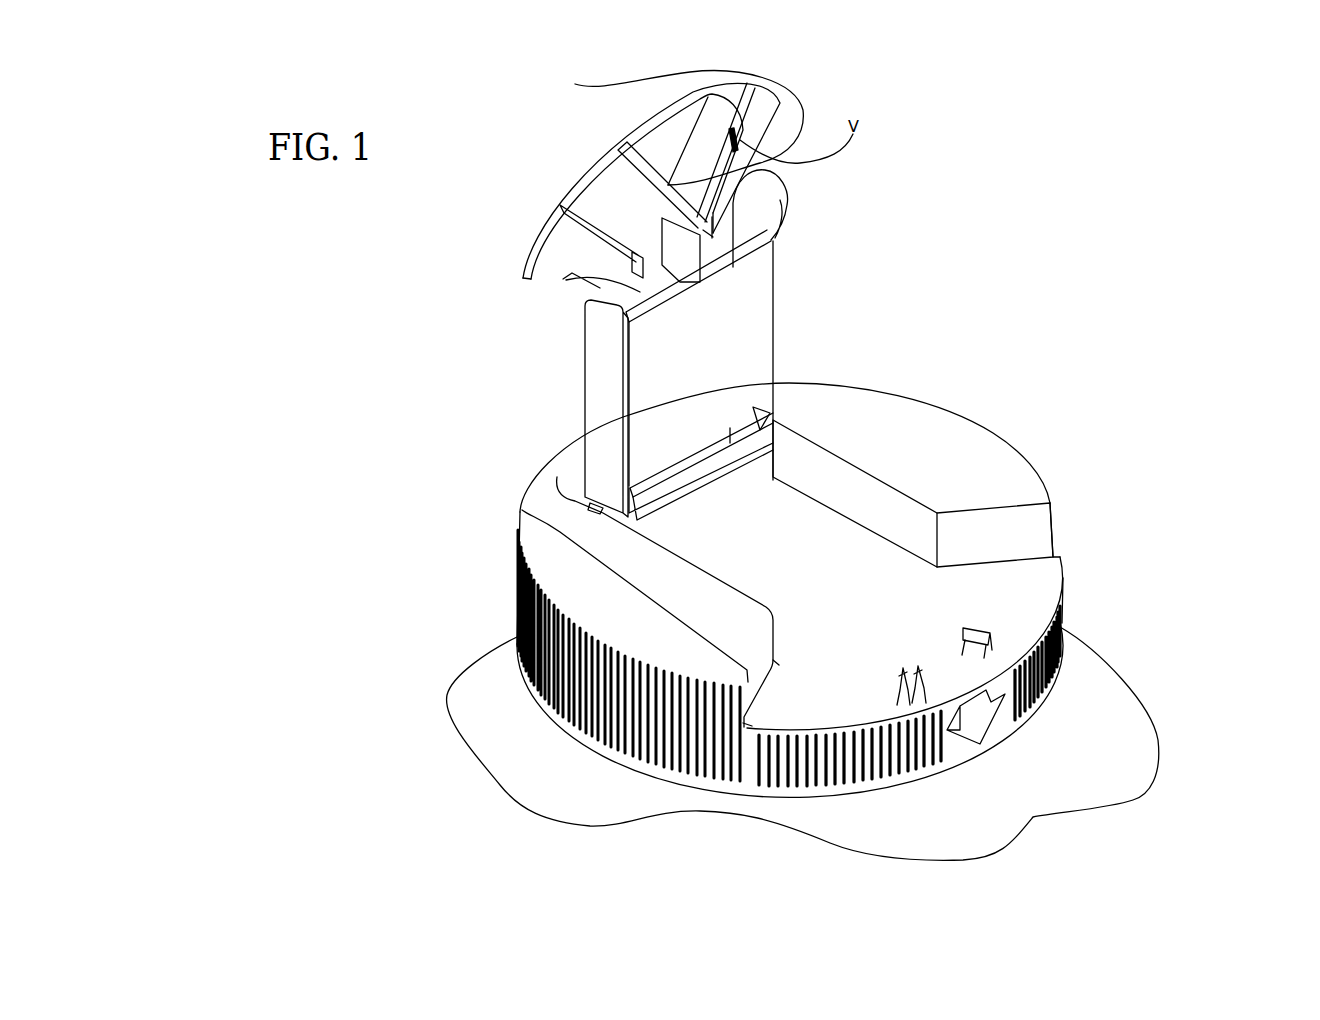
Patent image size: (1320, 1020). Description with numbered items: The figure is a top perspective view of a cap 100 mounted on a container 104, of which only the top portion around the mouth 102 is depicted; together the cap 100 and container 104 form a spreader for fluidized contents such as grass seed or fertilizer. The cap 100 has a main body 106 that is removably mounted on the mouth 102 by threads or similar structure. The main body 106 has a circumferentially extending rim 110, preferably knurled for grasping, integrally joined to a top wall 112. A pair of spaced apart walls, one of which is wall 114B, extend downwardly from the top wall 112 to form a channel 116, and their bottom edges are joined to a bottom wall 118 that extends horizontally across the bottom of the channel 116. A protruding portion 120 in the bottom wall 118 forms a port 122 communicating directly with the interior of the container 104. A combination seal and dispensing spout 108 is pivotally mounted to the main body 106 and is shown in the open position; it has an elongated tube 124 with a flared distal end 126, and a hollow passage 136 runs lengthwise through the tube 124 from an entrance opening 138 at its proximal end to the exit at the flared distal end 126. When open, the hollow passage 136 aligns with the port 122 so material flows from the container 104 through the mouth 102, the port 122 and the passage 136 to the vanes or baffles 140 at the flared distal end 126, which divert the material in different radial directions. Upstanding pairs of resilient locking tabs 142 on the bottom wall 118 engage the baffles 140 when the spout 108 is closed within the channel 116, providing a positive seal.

The cap 100 is at (372, 427).
The mouth 102 is at (1015, 727).
The container 104 is at (1092, 677).
The main body 106 is at (1058, 572).
The combination seal and dispensing spout 108 is at (778, 270).
The rim 110 is at (1060, 607).
The top wall 112 is at (980, 460).
The wall 114B is at (870, 510).
The channel 116 is at (807, 603).
The bottom wall 118 is at (980, 583).
The protruding portion 120 is at (722, 494).
The port 122 is at (744, 447).
The tube 124 is at (732, 347).
The flared distal end 126 is at (590, 213).
The hollow passage 136 is at (567, 280).
The opening 138 is at (773, 423).
The vanes or baffles 140 is at (713, 125).
The locking tabs 142 is at (962, 652).